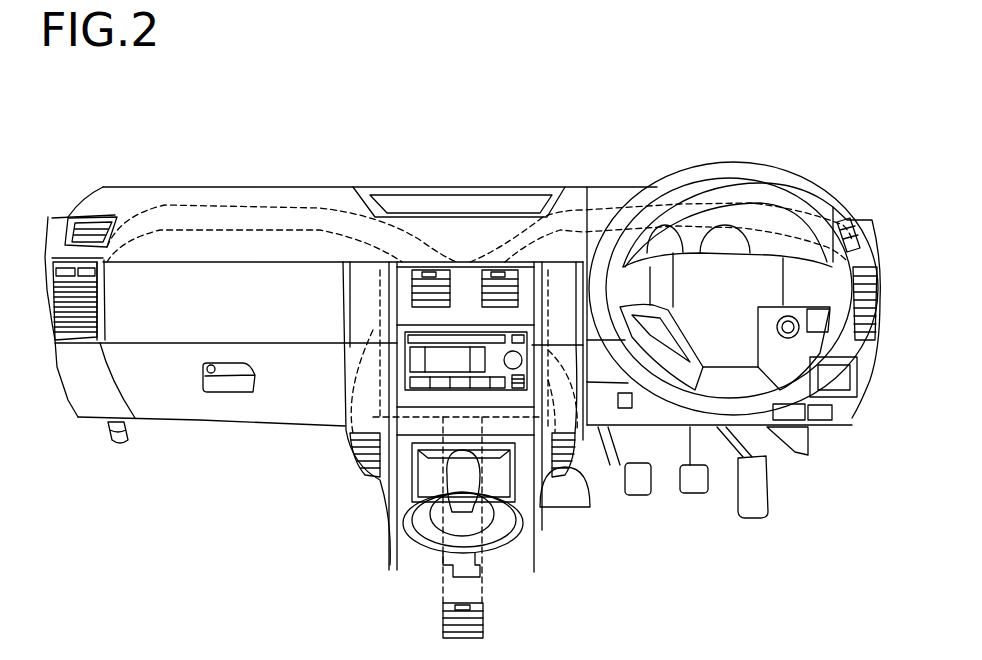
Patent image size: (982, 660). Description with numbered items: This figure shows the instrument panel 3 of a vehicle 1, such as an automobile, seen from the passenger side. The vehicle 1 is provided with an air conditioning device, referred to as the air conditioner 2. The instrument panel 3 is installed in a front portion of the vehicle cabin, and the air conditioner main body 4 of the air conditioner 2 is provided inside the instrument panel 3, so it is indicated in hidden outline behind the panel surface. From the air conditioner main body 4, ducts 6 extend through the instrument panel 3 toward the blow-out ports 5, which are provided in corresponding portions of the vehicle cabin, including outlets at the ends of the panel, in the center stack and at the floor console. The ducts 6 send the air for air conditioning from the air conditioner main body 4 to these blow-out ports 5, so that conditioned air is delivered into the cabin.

The vehicle 1 is at (525, 137).
The air conditioner 2 is at (225, 512).
The instrument panel 3 is at (349, 197).
The air conditioner main body 4 is at (372, 320).
The blow-out ports 5 is at (49, 217).
The ducts 6 is at (167, 205).